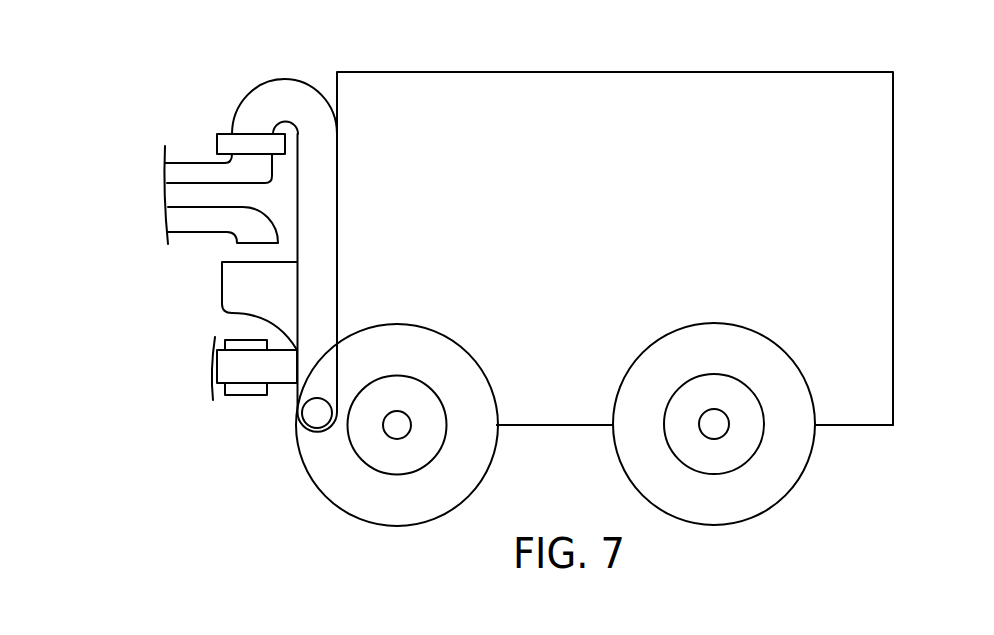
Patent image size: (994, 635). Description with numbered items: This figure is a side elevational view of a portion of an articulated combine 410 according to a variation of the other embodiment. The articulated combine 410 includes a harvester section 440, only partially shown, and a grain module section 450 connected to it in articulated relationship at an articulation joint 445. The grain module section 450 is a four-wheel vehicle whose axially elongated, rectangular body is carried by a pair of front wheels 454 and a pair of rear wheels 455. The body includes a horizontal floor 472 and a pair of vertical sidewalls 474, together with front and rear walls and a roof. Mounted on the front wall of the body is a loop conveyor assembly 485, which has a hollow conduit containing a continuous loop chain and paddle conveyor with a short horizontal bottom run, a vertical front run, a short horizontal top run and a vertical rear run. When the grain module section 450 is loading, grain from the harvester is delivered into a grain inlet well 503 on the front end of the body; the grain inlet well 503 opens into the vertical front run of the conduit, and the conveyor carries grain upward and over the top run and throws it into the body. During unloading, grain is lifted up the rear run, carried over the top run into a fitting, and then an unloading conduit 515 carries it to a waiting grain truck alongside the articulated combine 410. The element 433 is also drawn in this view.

The articulated combine 410 is at (222, 446).
The lower coupling arm 433 is at (193, 228).
The harvester section 440 is at (166, 173).
The articulation joint 445 is at (190, 412).
The grain module section 450 is at (853, 447).
The front wheels 454 is at (363, 513).
The rear wheels 455 is at (707, 515).
The horizontal floor 472 is at (560, 425).
The vertical sidewalls 474 is at (590, 92).
The loop conveyor assembly 485 is at (261, 424).
The grain inlet well 503 is at (223, 280).
The unloading conduit 515 is at (190, 170).